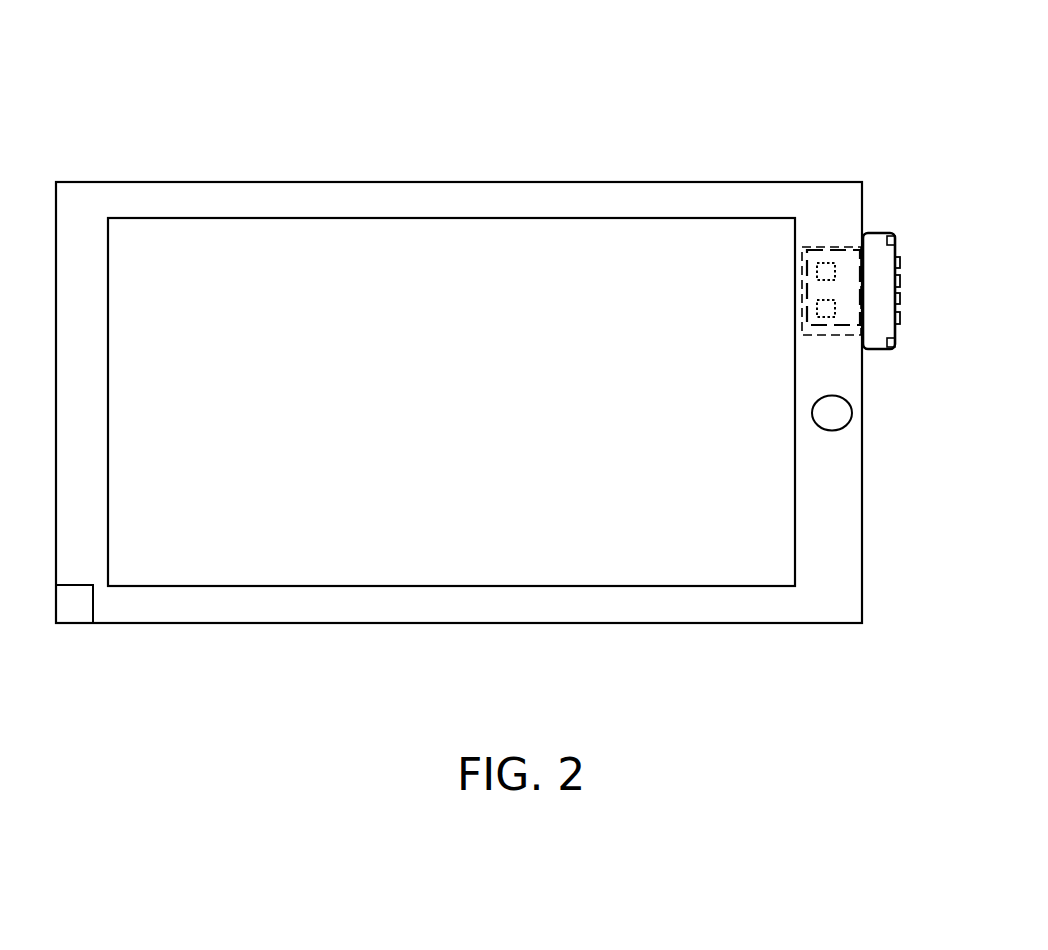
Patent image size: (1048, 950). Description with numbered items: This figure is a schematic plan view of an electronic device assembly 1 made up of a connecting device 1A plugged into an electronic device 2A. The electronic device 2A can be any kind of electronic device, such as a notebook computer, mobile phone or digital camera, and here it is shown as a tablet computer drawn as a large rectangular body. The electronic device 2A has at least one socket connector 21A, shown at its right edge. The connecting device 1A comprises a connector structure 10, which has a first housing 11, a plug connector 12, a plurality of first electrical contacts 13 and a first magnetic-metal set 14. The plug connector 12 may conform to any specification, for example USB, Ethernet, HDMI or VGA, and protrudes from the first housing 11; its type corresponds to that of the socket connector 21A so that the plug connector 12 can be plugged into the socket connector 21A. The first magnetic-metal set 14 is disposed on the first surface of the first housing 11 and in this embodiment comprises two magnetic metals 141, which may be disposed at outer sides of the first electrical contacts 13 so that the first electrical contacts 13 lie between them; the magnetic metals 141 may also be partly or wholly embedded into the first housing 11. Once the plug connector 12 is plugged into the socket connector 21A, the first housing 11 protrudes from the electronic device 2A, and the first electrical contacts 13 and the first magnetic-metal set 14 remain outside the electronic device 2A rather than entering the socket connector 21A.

The electronic device assembly 1 is at (80, 66).
The electronic device 2A is at (314, 179).
The socket connector 21A is at (808, 246).
The plug connector 12 is at (848, 297).
The connecting device 1A is at (933, 220).
The connector structure 10 is at (883, 220).
The first housing 11 is at (878, 260).
The first electrical contacts 13 is at (901, 262).
The first magnetic-metal set 14 is at (958, 368).
The magnetic metals 141 is at (897, 349).